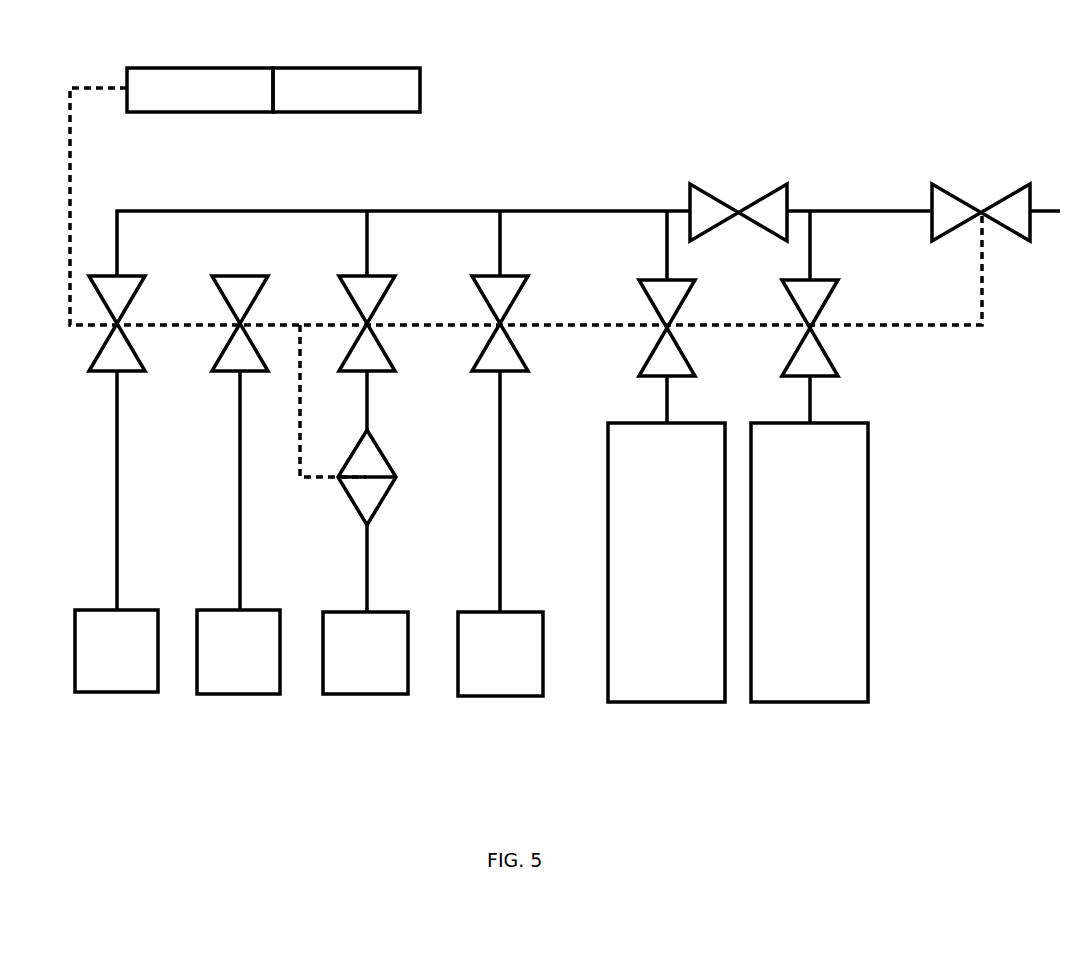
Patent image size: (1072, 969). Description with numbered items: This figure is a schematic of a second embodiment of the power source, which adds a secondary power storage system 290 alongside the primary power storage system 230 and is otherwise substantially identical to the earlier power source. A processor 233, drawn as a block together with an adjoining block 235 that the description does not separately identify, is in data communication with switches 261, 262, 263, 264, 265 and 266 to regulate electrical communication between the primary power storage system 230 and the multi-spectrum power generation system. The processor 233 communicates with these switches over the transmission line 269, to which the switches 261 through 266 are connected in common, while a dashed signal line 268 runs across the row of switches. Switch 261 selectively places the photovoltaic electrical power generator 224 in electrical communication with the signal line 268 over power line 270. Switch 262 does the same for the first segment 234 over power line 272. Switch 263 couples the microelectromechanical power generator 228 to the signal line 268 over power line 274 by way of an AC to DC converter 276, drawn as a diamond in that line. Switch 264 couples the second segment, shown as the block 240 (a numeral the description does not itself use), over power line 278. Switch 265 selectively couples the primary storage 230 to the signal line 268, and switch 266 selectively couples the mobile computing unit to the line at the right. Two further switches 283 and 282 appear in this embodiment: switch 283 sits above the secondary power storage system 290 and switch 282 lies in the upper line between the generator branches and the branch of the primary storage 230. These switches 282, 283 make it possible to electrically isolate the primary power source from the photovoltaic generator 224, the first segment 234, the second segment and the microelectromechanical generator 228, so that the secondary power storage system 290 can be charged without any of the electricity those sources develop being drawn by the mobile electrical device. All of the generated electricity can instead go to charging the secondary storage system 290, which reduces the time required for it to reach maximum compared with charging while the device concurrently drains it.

The processor 233 is at (200, 68).
The controller module 235 is at (345, 90).
The switch 261 is at (118, 292).
The switch 262 is at (240, 292).
The switch 263 is at (367, 290).
The switch 264 is at (500, 290).
The switch 265 is at (810, 300).
The switch 266 is at (950, 215).
The signal line 268 is at (868, 325).
The transmission line 269 is at (540, 211).
The power line 270 is at (117, 475).
The power line 272 is at (240, 555).
The power line 274 is at (367, 402).
The AC to DC converter 276 is at (365, 460).
The power line 278 is at (502, 518).
The switch 282 is at (705, 193).
The switch 283 is at (695, 282).
The photovoltaic electrical power generator 224 is at (116, 651).
The first segment 234 is at (238, 652).
The microelectromechanical power generator 228 is at (365, 653).
The reservoir 240 is at (500, 654).
The secondary power storage system 290 is at (670, 702).
The primary power storage system 230 is at (868, 468).